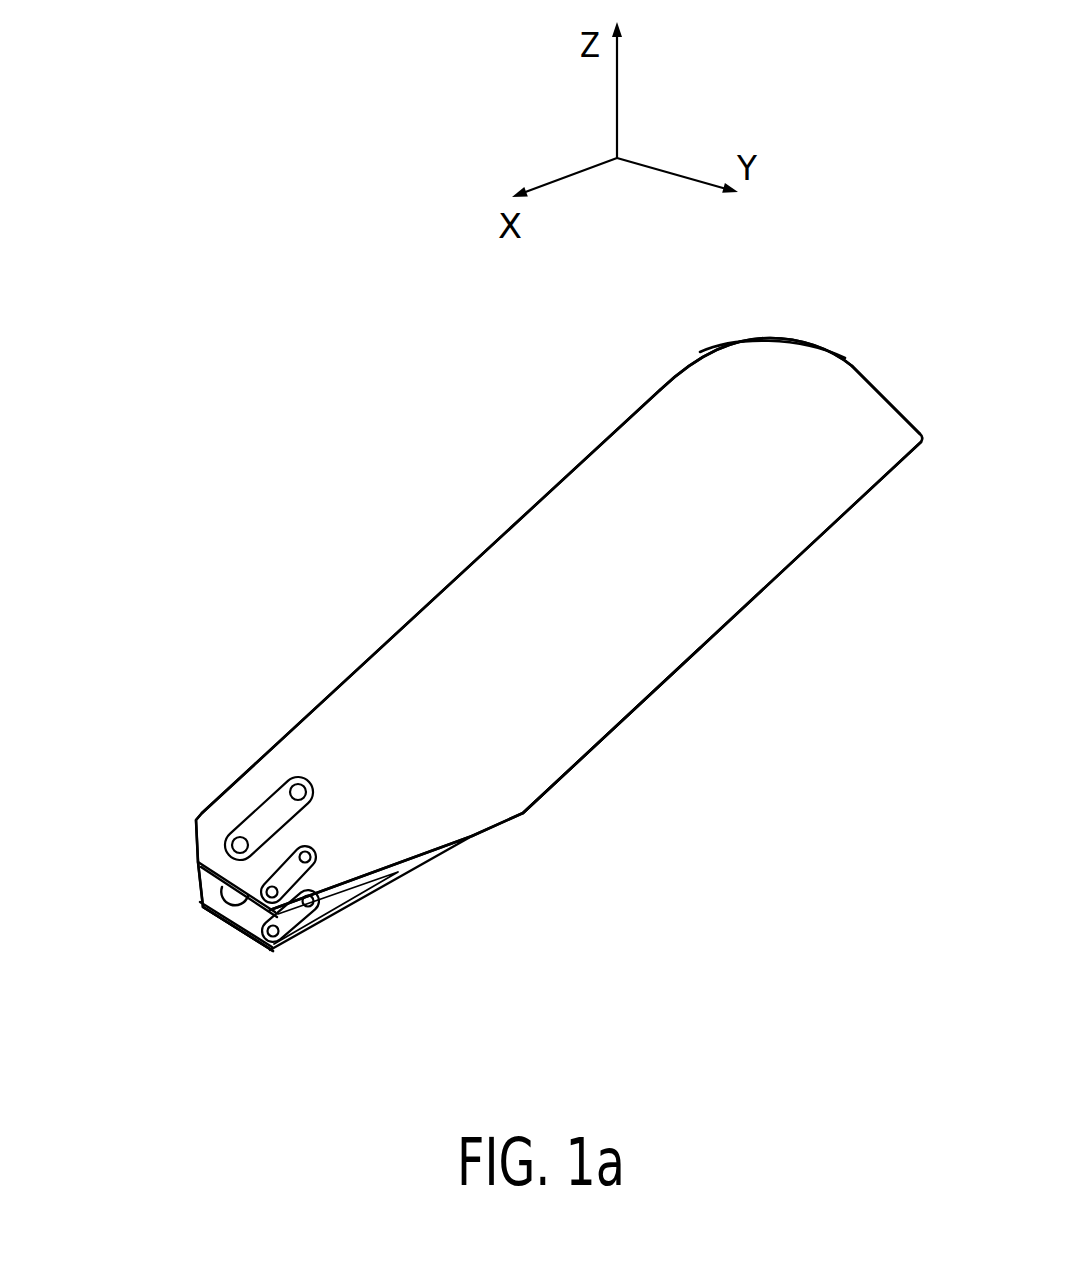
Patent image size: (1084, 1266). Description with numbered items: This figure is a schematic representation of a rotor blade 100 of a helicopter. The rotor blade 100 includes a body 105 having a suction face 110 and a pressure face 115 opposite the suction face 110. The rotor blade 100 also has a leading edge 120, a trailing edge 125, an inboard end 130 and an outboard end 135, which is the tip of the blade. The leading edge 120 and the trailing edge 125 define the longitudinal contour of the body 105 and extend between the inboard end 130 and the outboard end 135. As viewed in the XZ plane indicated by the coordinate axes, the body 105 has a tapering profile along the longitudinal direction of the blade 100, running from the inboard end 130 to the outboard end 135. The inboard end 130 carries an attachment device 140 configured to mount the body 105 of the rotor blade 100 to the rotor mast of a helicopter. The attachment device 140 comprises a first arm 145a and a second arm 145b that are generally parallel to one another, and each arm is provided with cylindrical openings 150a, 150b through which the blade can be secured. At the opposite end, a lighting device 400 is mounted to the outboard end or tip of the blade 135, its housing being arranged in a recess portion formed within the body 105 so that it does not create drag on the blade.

The rotor blade 100 is at (355, 421).
The body 105 is at (752, 392).
The suction face 110 is at (463, 663).
The pressure face 115 is at (583, 752).
The leading edge 120 is at (335, 687).
The trailing edge 125 is at (672, 669).
The inboard end 130 is at (247, 943).
The outboard end 135 is at (830, 347).
The attachment device 140 is at (367, 935).
The first arm 145a is at (203, 808).
The second arm 145b is at (200, 887).
The cylindrical openings 150a is at (242, 788).
The cylindrical openings 150b is at (208, 915).
The lighting device 400 is at (870, 375).